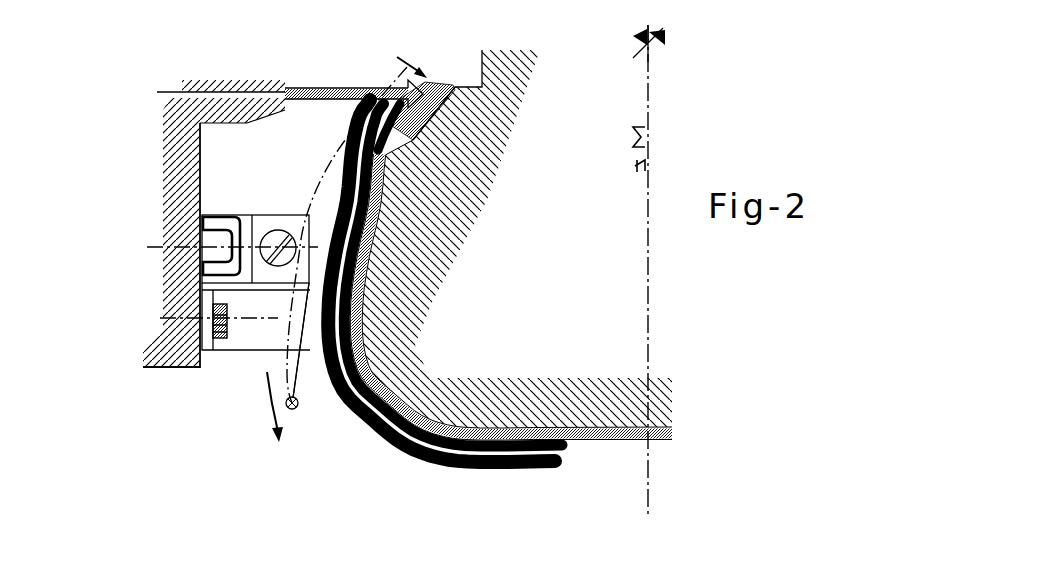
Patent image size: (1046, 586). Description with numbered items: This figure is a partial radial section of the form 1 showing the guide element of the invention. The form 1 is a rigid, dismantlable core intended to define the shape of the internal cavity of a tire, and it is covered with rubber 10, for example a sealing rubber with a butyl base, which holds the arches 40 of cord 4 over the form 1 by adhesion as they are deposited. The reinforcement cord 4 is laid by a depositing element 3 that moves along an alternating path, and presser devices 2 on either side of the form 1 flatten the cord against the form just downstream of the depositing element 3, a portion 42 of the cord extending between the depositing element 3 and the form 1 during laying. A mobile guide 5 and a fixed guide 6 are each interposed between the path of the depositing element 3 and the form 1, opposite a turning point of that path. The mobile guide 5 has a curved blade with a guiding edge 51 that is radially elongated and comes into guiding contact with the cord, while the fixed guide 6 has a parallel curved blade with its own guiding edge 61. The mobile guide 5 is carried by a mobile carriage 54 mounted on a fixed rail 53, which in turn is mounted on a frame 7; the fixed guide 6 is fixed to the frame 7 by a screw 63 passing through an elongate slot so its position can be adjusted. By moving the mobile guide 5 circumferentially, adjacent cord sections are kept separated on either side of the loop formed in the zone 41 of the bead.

The form 1 is at (568, 405).
The presser device 2 is at (332, 90).
The depositing element 3 is at (300, 350).
The reinforcement cord 4 is at (299, 405).
The mobile guide 5 is at (373, 428).
The fixed guide 6 is at (428, 430).
The frame 7 is at (203, 282).
The rubber 10 is at (610, 437).
The arches of cord 40 is at (408, 105).
The zone of the bead 41 is at (384, 100).
The portion of cord 42 is at (270, 358).
The guiding edge 51 is at (318, 196).
The fixed rail 53 is at (203, 258).
The mobile carriage 54 is at (203, 216).
The guiding edge 61 is at (342, 150).
The screw 63 is at (226, 348).